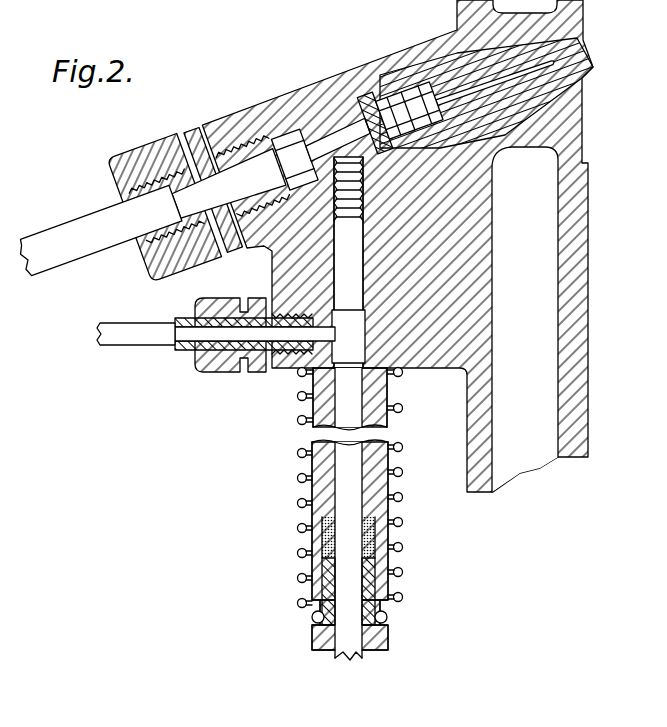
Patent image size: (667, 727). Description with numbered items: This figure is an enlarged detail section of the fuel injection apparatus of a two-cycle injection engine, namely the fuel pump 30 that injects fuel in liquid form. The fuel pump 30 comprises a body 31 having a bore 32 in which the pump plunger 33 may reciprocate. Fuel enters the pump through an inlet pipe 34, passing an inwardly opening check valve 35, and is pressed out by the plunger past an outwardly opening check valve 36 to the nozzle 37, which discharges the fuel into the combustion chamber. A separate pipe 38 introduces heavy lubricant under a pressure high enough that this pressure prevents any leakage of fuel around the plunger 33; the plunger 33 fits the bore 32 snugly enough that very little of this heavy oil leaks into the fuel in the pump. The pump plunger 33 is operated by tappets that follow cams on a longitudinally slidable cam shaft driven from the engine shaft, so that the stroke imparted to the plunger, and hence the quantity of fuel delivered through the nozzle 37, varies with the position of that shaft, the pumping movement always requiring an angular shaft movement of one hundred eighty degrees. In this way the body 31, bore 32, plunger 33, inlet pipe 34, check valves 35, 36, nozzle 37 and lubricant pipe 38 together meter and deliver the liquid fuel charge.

The fuel pump 30 is at (307, 373).
The body 31 is at (412, 250).
The bore 32 is at (352, 153).
The pump plunger 33 is at (345, 680).
The inlet pipe 34 is at (99, 231).
The inwardly opening check valve 35 is at (204, 192).
The outwardly opening check valve 36 is at (381, 92).
The nozzle 37 is at (577, 37).
The pipe 38 is at (160, 333).